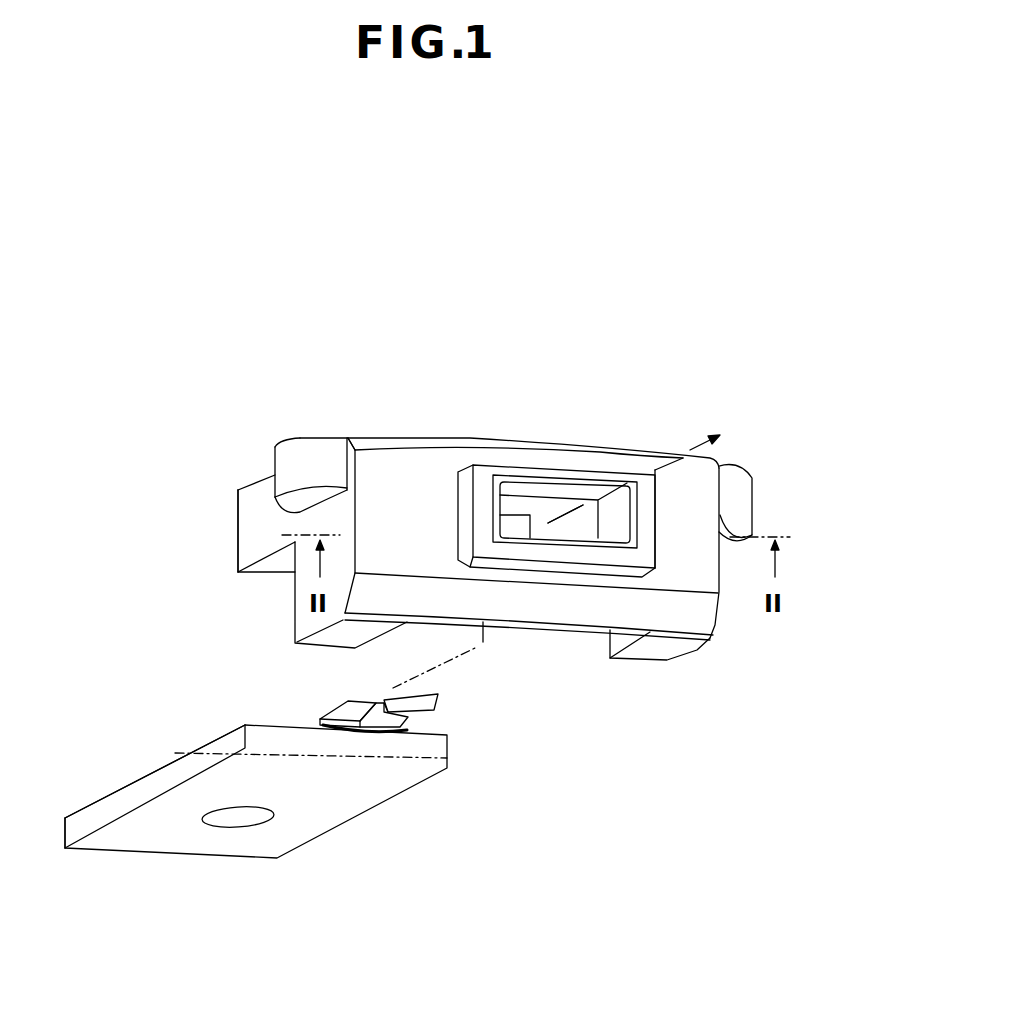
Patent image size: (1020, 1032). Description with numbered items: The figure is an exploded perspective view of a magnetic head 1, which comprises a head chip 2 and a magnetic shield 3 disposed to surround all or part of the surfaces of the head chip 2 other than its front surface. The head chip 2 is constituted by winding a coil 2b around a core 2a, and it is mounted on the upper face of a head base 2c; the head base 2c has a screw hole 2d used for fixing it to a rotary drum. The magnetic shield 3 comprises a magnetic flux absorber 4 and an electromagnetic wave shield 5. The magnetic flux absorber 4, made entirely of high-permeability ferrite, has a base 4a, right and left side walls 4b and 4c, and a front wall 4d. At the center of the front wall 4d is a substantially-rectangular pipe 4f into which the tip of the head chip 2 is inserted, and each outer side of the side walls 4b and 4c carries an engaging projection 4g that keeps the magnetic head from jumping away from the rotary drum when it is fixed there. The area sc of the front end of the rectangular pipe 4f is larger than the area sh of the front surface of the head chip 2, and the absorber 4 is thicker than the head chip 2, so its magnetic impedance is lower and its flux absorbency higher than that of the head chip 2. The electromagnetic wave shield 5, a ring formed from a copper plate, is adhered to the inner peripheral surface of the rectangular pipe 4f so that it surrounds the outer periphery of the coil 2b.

The magnetic head 1 is at (307, 307).
The head chip 2 is at (129, 768).
The core 2a is at (355, 706).
The coil 2b is at (320, 713).
The head base 2c is at (205, 747).
The screw hole 2d is at (203, 810).
The magnetic shield 3 is at (348, 353).
The magnetic flux absorber 4 is at (368, 437).
The base 4a is at (248, 520).
The side wall 4b is at (297, 624).
The side wall 4c is at (670, 648).
The front wall 4d is at (703, 503).
The substantially-rectangular pipe 4f is at (550, 475).
The engaging projection 4g is at (282, 458).
The electromagnetic wave shield 5 is at (522, 475).
The area of the end on the front surface of the substantially-rectangular pipe sc is at (578, 550).
The area of the front surface of the head chip sh is at (433, 696).